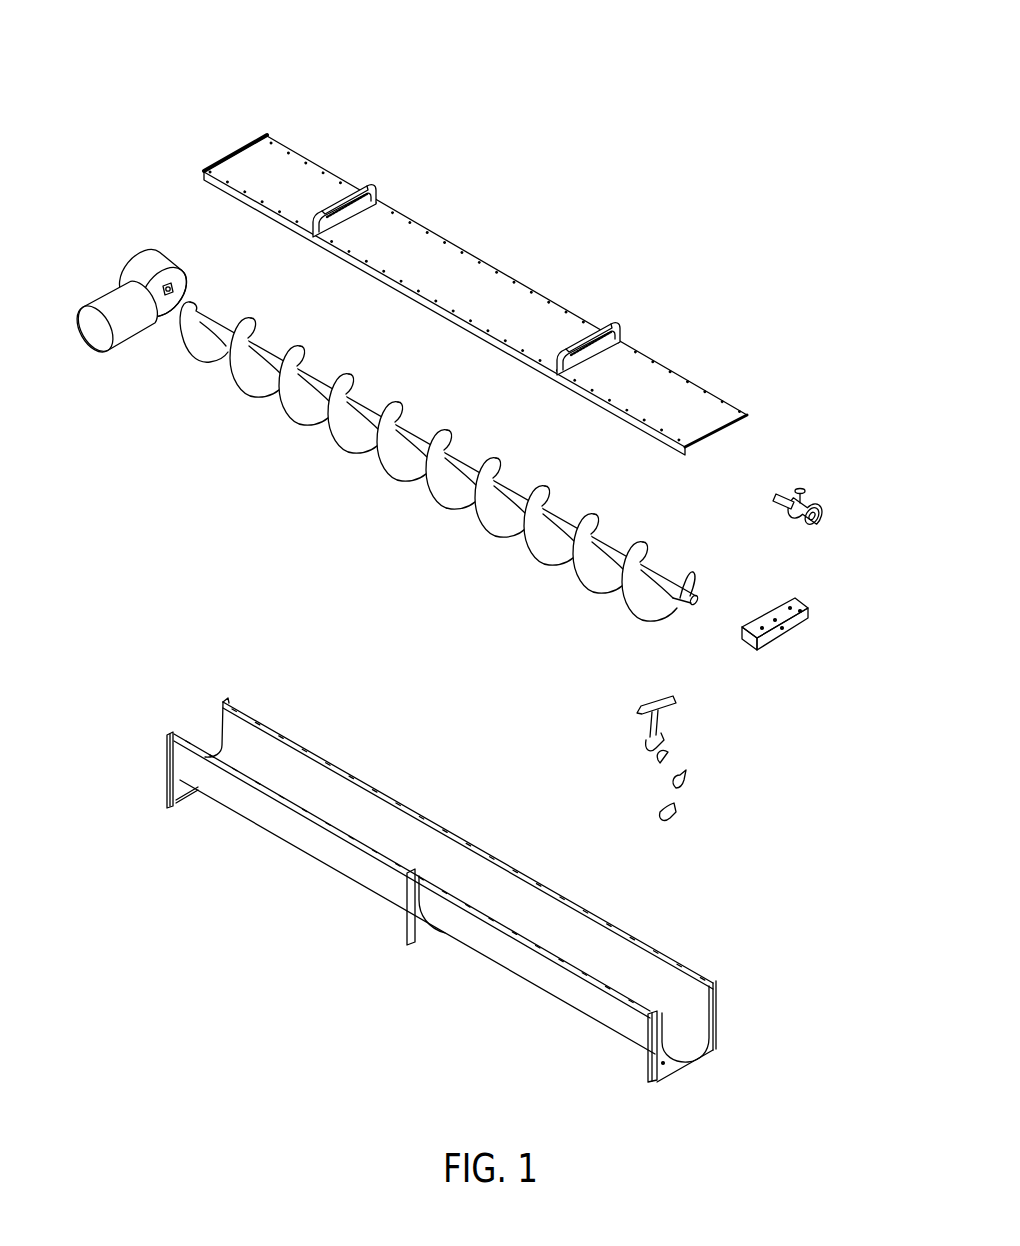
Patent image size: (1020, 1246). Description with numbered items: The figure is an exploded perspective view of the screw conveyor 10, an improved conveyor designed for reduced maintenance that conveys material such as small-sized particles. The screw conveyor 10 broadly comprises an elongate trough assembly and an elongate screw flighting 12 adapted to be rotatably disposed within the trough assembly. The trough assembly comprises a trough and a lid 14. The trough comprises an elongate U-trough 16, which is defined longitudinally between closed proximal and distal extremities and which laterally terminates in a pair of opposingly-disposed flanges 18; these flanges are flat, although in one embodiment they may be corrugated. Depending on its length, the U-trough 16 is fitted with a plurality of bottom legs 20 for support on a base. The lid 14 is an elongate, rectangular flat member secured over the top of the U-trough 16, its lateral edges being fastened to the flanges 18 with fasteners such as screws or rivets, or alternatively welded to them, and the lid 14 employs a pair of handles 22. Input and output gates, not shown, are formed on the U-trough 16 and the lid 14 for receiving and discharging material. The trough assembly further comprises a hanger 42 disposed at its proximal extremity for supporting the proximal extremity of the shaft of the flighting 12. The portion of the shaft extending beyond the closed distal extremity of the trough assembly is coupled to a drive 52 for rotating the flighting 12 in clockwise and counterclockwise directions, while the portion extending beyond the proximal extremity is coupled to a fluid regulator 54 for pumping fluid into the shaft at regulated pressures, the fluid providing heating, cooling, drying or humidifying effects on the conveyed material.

The screw conveyor 10 is at (682, 88).
The screw flighting 12 is at (293, 453).
The lid 14 is at (228, 205).
The U-trough 16 is at (185, 680).
The flanges 18 is at (594, 914).
The bottom legs 20 is at (178, 803).
The handles 22 is at (366, 187).
The hanger 42 is at (765, 738).
The drive 52 is at (118, 298).
The fluid regulator 54 is at (822, 508).